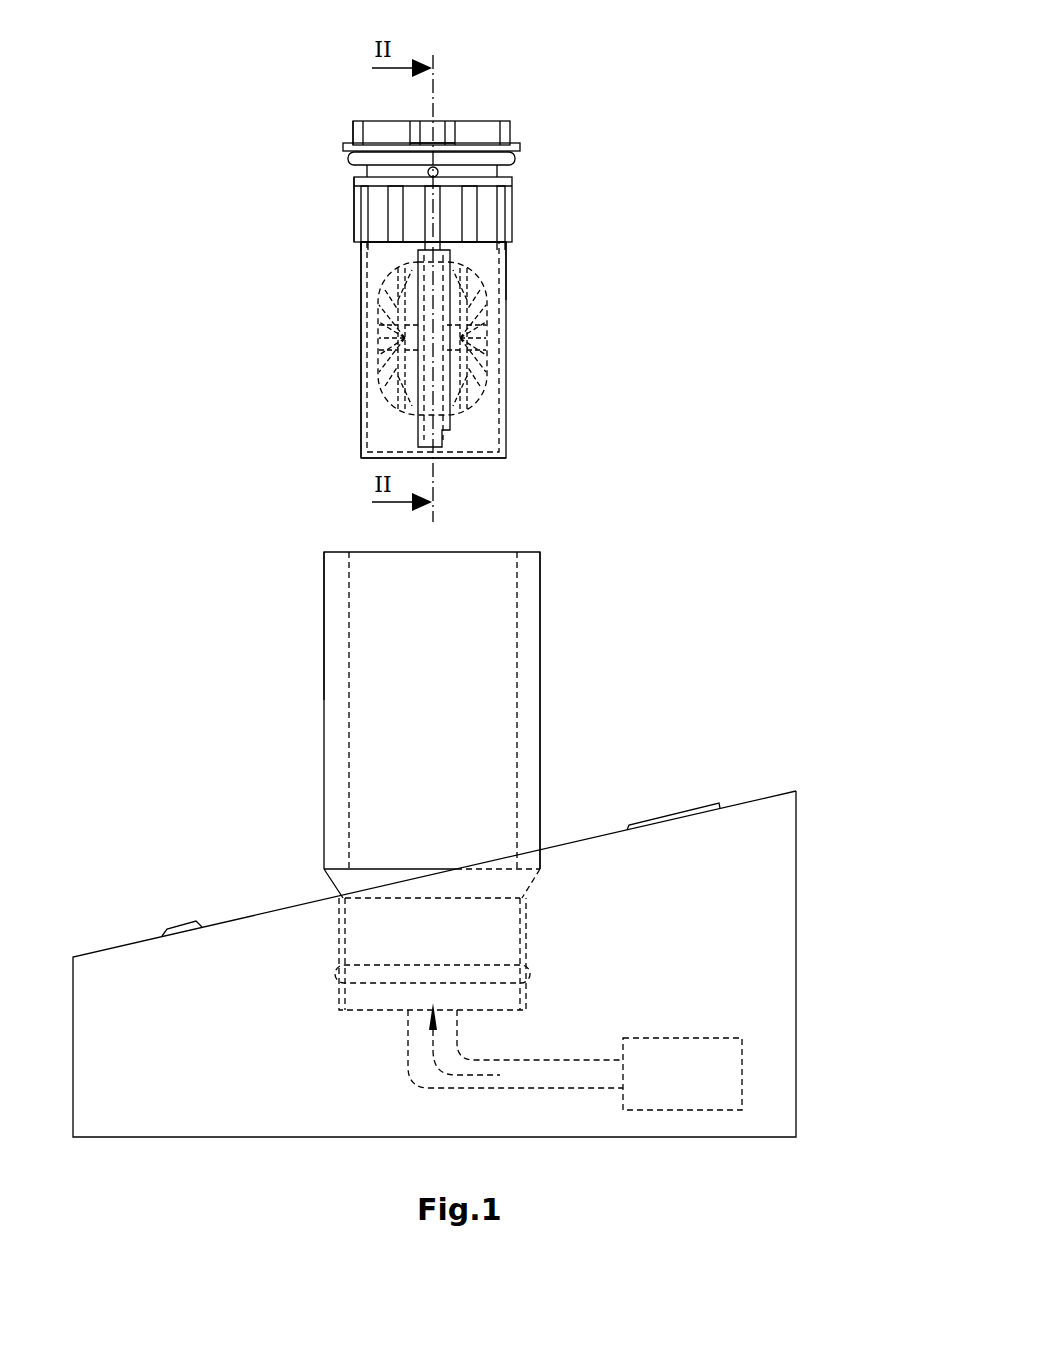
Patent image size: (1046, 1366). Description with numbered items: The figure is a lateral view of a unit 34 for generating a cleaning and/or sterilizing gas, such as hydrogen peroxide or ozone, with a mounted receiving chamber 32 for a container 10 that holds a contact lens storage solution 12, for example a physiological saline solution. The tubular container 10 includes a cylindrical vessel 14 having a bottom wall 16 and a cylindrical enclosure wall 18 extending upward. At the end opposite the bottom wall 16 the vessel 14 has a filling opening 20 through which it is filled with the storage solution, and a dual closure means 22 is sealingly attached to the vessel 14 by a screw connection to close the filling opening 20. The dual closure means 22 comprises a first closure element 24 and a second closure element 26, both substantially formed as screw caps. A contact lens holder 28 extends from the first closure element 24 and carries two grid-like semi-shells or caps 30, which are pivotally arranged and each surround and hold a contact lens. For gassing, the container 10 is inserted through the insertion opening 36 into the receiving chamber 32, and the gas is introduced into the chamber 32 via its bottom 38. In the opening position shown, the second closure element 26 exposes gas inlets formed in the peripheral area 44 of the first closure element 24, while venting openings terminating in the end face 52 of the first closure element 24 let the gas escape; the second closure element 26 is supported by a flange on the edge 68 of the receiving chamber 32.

The container 10 is at (228, 245).
The contact lens storage solution 12 is at (477, 427).
The vessel 14 is at (557, 288).
The bottom wall 16 is at (470, 458).
The cylindrical enclosure wall 18 is at (506, 360).
The filling opening 20 is at (457, 551).
The dual closure means 22 is at (297, 167).
The first closure element 24 is at (333, 227).
The second closure element 26 is at (533, 128).
The contact lens holder 28 is at (503, 267).
The grid-like semi-shells or caps 30 is at (372, 337).
The receiving chamber 32 is at (528, 685).
The unit for generating the cleaning and/or sterilizing gas 34 is at (735, 877).
The insertion opening 36 is at (482, 552).
The bottom of the chamber 38 is at (485, 1010).
The peripheral area 44 is at (524, 222).
The end face 52 is at (470, 107).
The edge of receiving chamber 68 is at (331, 551).